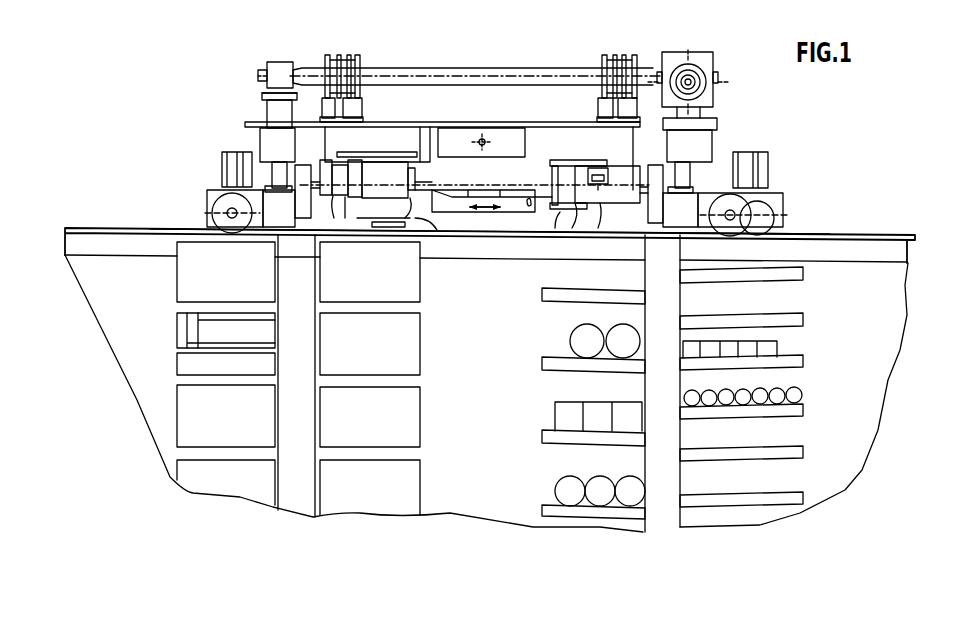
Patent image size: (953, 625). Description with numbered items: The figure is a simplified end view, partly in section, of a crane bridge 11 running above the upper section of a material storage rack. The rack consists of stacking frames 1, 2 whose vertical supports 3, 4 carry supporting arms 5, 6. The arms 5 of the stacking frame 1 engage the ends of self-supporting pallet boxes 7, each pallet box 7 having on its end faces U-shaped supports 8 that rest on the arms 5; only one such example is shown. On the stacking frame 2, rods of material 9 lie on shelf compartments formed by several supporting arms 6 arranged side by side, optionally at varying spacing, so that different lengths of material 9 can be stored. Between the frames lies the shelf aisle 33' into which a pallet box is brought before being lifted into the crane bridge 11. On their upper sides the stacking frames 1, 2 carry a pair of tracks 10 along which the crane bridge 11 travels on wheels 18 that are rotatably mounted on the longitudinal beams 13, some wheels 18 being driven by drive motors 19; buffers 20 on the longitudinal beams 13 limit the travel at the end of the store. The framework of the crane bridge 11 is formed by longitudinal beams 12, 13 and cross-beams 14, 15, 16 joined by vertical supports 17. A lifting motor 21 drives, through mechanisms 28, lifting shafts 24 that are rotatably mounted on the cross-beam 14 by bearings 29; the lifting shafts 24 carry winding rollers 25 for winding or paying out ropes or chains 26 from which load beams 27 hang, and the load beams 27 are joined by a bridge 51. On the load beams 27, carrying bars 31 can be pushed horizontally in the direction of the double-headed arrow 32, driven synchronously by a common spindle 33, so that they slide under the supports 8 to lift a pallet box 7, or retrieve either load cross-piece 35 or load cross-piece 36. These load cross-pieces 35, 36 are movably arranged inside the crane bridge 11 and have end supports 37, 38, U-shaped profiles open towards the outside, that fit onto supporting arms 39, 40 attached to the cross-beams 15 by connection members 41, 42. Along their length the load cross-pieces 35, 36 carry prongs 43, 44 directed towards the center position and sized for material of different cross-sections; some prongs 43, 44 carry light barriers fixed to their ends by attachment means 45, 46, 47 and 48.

The stacking frame 1 is at (354, 390).
The stacking frame 2 is at (729, 399).
The vertical support 3 is at (298, 492).
The vertical support 4 is at (665, 510).
The supporting arm 5 is at (205, 322).
The supporting arm 6 is at (790, 313).
The pallet box 7 is at (188, 428).
The U-shaped support 8 is at (192, 344).
The rods of material 9 is at (800, 395).
The track 10 is at (893, 259).
The crane bridge 11 is at (477, 42).
The longitudinal beam 12 is at (264, 118).
The longitudinal beam 13 is at (218, 190).
The cross-beam 14 is at (266, 140).
The cross-beam 15 is at (276, 213).
The cross-beam 16 is at (713, 128).
The vertical support 17 is at (685, 172).
The wheel 18 is at (217, 227).
The drive motor 19 is at (767, 214).
The buffer 20 is at (760, 152).
The lifting motor 21 is at (685, 64).
The lifting shaft 24 is at (437, 68).
The winding roller 25 is at (347, 57).
The rope or chain 26 is at (338, 100).
The load beam 27 is at (543, 142).
The mechanism 28 is at (707, 52).
The bearing 29 is at (287, 64).
The carrying means 31 is at (527, 200).
The double-headed arrow 32 is at (490, 200).
The spindle 33 is at (481, 123).
The shelf aisle 33' is at (386, 503).
The load cross-piece 35 is at (331, 220).
The load cross-piece 36 is at (602, 184).
The support 37 is at (397, 223).
The support 38 is at (596, 218).
The supporting arm 39 is at (430, 150).
The supporting arm 40 is at (535, 215).
The connection member 41 is at (304, 168).
The connection member 42 is at (655, 170).
The prong 43 is at (355, 220).
The prong 44 is at (575, 163).
The attachment means 45 is at (423, 225).
The attachment means 46 is at (390, 152).
The attachment means 47 is at (567, 215).
The attachment means 48 is at (567, 167).
The bridge 51 is at (480, 140).